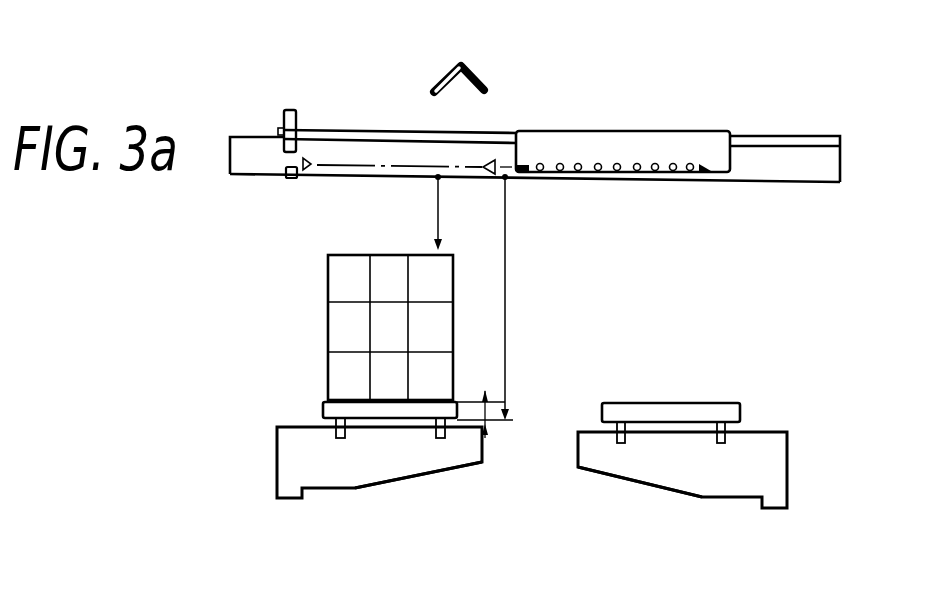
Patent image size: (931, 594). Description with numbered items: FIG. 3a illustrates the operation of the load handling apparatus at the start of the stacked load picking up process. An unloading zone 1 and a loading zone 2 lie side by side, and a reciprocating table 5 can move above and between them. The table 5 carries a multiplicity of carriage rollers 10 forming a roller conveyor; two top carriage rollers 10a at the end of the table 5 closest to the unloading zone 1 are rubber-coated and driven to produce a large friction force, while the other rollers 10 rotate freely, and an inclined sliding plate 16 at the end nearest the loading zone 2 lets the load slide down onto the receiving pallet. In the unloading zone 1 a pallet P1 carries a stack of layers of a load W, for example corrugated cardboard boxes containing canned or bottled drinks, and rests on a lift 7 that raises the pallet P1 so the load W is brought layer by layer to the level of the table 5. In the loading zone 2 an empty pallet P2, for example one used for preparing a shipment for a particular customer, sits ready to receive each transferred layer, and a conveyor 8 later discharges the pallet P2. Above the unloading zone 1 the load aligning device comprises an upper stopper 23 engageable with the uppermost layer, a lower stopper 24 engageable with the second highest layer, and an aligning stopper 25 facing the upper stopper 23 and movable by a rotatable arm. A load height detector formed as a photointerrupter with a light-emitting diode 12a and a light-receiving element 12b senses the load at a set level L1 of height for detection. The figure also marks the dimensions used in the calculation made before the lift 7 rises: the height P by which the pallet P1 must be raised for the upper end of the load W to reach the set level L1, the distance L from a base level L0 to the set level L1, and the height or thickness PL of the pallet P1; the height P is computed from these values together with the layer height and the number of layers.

The reciprocating table 5 is at (634, 122).
The upper stopper 23 is at (284, 118).
The lower stopper 24 is at (286, 179).
The light-emitting diode 12a is at (307, 173).
The light-receiving element 12b is at (486, 176).
The height by which the pallet is raised P is at (431, 212).
The set level of height for detection L1 is at (504, 165).
The distance from base level to set level L is at (513, 297).
The aligning stopper 25 is at (480, 77).
The top carriage rollers 10a is at (532, 174).
The carriage rollers 10 is at (653, 174).
The inclined sliding plate 16 is at (707, 178).
The load W is at (328, 293).
The pallet P1 is at (323, 406).
The height or thickness of the pallet PL is at (484, 403).
The base level L0 is at (502, 422).
The unloading zone 1 is at (341, 532).
The lift 7 is at (412, 484).
The empty pallet P2 is at (702, 410).
The loading zone 2 is at (730, 537).
The conveyor 8 is at (650, 490).